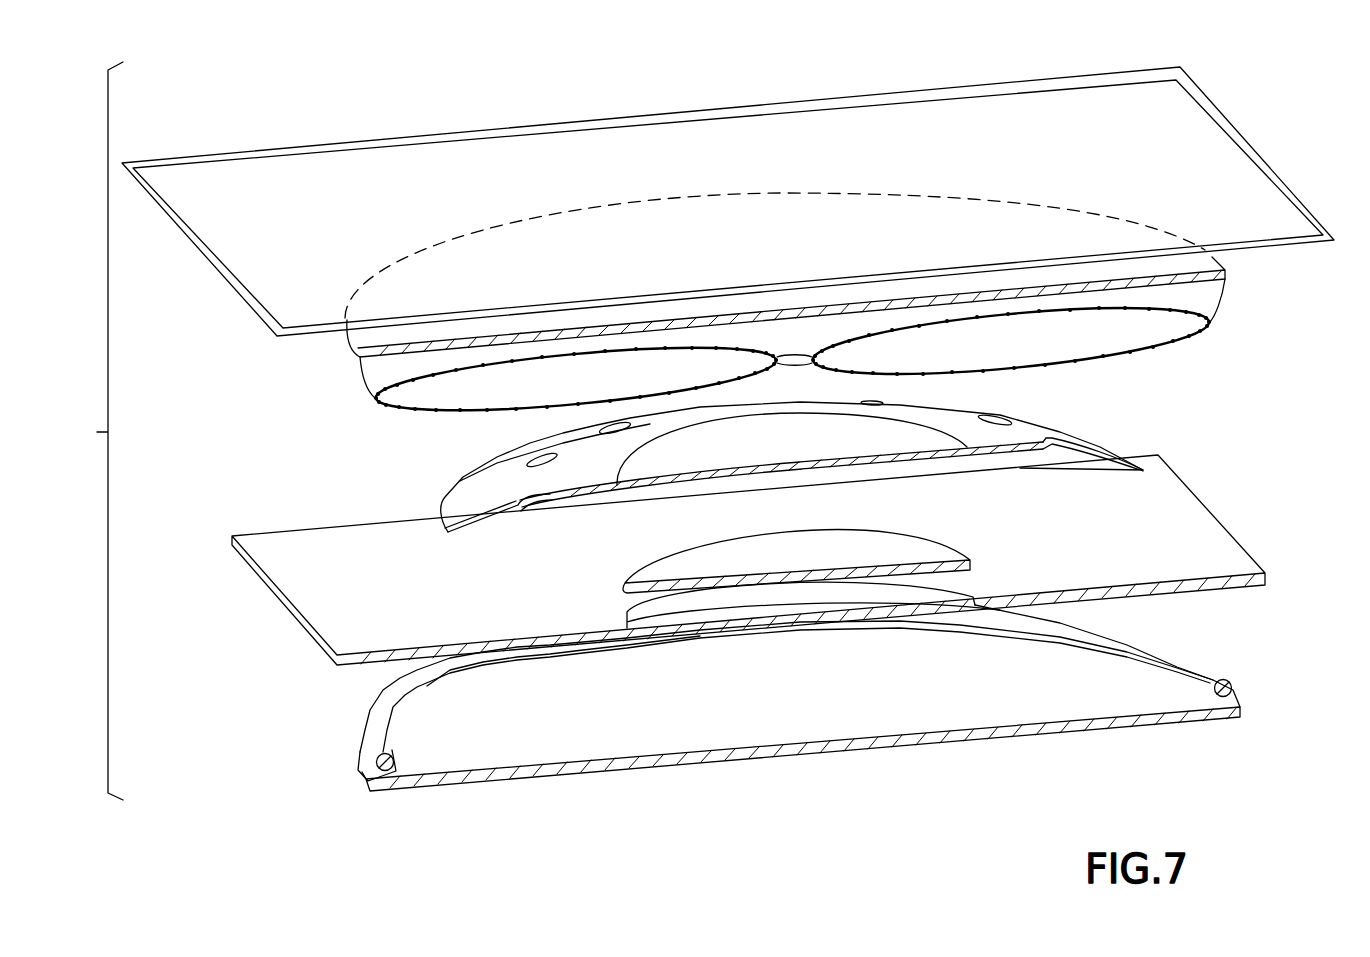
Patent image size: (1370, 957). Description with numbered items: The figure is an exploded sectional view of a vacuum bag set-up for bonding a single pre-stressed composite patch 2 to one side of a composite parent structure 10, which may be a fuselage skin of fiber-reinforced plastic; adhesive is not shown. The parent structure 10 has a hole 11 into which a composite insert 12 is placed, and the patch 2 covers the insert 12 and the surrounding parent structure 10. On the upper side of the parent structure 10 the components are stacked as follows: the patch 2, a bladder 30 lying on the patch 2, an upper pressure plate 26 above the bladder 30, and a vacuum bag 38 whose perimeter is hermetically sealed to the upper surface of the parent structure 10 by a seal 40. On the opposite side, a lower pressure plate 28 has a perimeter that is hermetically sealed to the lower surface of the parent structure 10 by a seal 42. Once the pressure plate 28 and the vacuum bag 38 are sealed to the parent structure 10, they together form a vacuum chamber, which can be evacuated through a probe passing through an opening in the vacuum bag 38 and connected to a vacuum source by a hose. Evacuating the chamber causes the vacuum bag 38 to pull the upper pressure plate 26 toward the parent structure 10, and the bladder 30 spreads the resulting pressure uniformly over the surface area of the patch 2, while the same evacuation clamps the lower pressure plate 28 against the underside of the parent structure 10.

The patch 2 is at (453, 498).
The composite parent structure 10 is at (1170, 497).
The hole 11 is at (968, 580).
The composite insert 12 is at (925, 530).
The upper pressure plate 26 is at (1228, 274).
The pressure plate 28 is at (465, 742).
The bladder 30 is at (1185, 338).
The vacuum bag 38 is at (1175, 118).
The seal 40 is at (1268, 163).
The seal 42 is at (1172, 652).